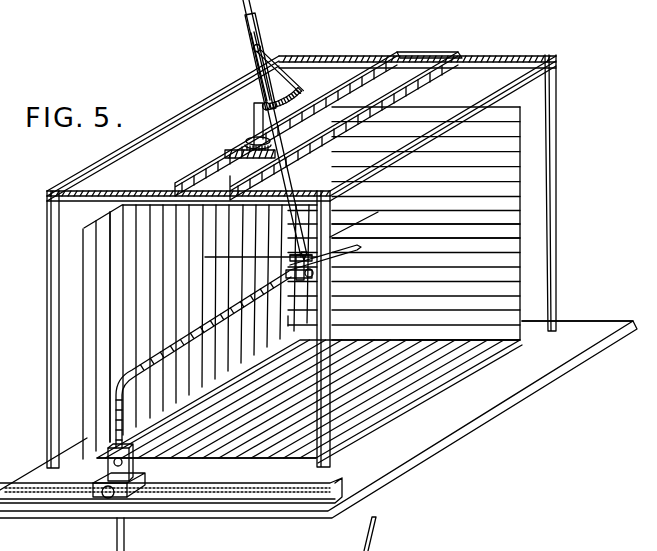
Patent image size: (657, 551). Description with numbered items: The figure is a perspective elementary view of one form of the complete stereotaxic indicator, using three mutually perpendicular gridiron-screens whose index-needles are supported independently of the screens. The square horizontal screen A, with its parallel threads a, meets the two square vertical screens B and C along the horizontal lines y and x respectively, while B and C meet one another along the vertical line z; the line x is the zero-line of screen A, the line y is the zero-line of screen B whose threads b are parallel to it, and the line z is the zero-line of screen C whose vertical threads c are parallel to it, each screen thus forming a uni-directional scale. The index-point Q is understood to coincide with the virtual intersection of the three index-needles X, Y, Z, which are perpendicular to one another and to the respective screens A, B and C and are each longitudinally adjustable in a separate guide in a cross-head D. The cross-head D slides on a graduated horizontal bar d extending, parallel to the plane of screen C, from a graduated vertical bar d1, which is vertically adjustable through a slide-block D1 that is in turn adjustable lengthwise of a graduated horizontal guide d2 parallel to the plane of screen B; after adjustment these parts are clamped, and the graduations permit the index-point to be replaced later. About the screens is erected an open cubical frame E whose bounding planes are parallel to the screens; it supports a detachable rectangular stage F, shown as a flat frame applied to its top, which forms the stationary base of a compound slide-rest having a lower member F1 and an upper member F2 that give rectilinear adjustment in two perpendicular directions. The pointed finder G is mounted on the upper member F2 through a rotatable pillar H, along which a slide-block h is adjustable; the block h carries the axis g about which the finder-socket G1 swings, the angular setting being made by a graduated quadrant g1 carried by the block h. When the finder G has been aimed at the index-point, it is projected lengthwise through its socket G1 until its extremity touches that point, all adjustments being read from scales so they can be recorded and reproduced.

The horizontal gridiron-screen A is at (419, 395).
The threads of screen A a is at (445, 345).
The vertical gridiron-screen B is at (520, 173).
The threads of screen B b is at (500, 236).
The vertical gridiron-screen C is at (84, 350).
The threads of screen C c is at (110, 268).
The cross-head D is at (312, 281).
The slide-block D1 is at (131, 490).
The graduated horizontal bar d is at (195, 338).
The graduated vertical bar d1 is at (115, 412).
The graduated horizontal guide d2 is at (220, 493).
The cubical frame E is at (548, 112).
The rectangular stage F is at (86, 173).
The lower member of compound slide-rest F1 is at (406, 86).
The upper member of compound slide-rest F2 is at (232, 151).
The finder G is at (242, 13).
The finder-socket G1 is at (292, 80).
The pivot axis of finder-socket g is at (250, 50).
The graduated quadrant g1 is at (298, 96).
The pillar H is at (253, 118).
The slide-block h is at (259, 43).
The crank head Q is at (298, 251).
The index-needle X is at (330, 350).
The zero-line of screen A x is at (174, 401).
The index-needle Y is at (363, 216).
The zero-line of screen B y is at (458, 340).
The index-needle Z is at (287, 324).
The zero-line of screen C z is at (205, 257).